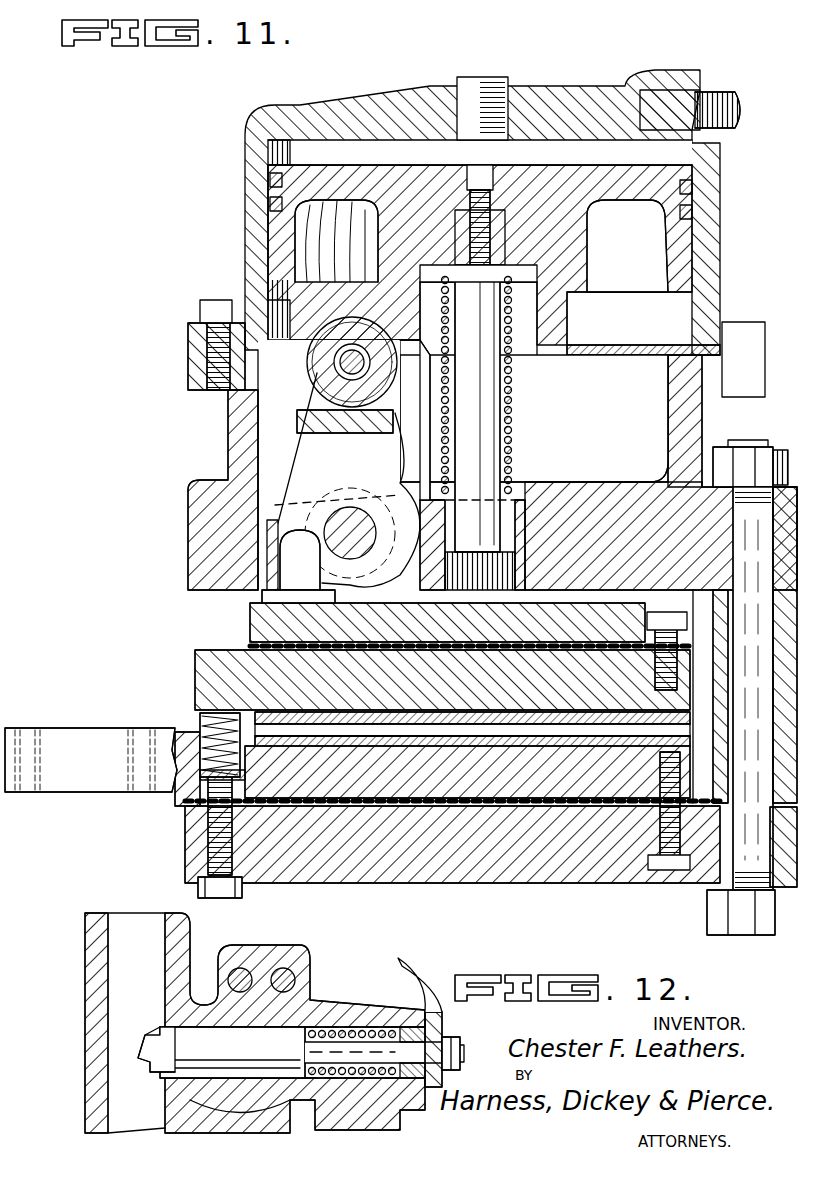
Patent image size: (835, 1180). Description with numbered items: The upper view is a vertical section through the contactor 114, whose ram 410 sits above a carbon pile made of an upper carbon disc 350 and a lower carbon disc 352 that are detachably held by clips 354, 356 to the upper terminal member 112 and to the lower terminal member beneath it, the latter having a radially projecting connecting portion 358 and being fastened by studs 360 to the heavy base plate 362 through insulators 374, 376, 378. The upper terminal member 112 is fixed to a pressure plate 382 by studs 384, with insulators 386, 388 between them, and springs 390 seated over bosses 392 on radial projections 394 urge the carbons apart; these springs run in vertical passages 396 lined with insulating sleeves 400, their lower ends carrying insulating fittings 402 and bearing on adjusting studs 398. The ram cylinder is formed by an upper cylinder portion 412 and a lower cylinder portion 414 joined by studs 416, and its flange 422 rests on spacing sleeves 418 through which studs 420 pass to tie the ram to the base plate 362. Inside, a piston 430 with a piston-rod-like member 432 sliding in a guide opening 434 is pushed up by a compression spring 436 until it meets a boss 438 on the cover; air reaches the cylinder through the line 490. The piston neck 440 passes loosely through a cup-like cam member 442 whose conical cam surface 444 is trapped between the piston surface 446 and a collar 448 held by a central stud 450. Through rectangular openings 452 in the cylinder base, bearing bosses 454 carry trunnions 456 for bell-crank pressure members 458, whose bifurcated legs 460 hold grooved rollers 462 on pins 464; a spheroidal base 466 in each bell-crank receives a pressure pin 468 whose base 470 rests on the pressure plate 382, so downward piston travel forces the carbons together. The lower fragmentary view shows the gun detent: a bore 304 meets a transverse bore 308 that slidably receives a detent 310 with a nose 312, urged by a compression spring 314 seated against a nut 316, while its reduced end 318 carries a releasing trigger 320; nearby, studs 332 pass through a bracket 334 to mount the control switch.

In FIG. 11, the ram 410 is at (700, 240).
In FIG. 11, the upper cylinder portion 412 is at (245, 232).
In FIG. 11, the lower cylinder portion 414 is at (255, 440).
In FIG. 11, the studs 416 is at (215, 300).
In FIG. 11, the spacing sleeves 418 is at (753, 688).
In FIG. 11, the studs 420 is at (745, 525).
In FIG. 11, the flange 422 is at (790, 470).
In FIG. 11, the piston 430 is at (525, 185).
In FIG. 11, the piston-rod-like member 432 is at (510, 425).
In FIG. 11, the guide opening 434 is at (540, 490).
In FIG. 11, the compression spring 436 is at (505, 378).
In FIG. 11, the boss 438 is at (430, 140).
In FIG. 11, the neck 440 is at (435, 240).
In FIG. 11, the cam member 442 is at (560, 258).
In FIG. 11, the conical cam surface 444 is at (580, 318).
In FIG. 11, the piston surface 446 is at (545, 228).
In FIG. 11, the collar 448 is at (505, 258).
In FIG. 11, the central stud 450 is at (478, 165).
In FIG. 11, the rectangular openings 452 is at (380, 605).
In FIG. 11, the bearing bosses 454 is at (400, 465).
In FIG. 11, the trunnions 456 is at (348, 508).
In FIG. 11, the pressure members 458 is at (258, 465).
In FIG. 11, the legs 460 is at (258, 405).
In FIG. 11, the grooved rollers 462 is at (348, 318).
In FIG. 11, the pins 464 is at (333, 357).
In FIG. 11, the base of recess 466 is at (275, 525).
In FIG. 11, the pressure pin 468 is at (300, 595).
In FIG. 11, the base of pressure pin 470 is at (265, 598).
In FIG. 11, the line 490 is at (718, 95).
In FIG. 11, the contactor 114 is at (230, 161).
In FIG. 11, the upper terminal member 112 is at (720, 675).
In FIG. 11, the upper carbon disc 350 is at (500, 712).
In FIG. 11, the lower carbon disc 352 is at (560, 735).
In FIG. 11, the clips 354 is at (470, 665).
In FIG. 11, the clips 356 is at (455, 752).
In FIG. 11, the connecting portion 358 is at (88, 790).
In FIG. 11, the studs 360 is at (665, 885).
In FIG. 11, the base plate 362 is at (520, 885).
In FIG. 11, the insulator 374 is at (505, 810).
In FIG. 11, the insulator 376 is at (692, 845).
In FIG. 11, the insulator 378 is at (648, 840).
In FIG. 11, the pressure plate 382 is at (525, 600).
In FIG. 11, the studs 384 is at (668, 605).
In FIG. 11, the insulator 386 is at (250, 645).
In FIG. 11, the insulator 388 is at (655, 662).
In FIG. 11, the springs 390 is at (647, 620).
In FIG. 11, the bosses 392 is at (235, 700).
In FIG. 11, the radial projections 394 is at (195, 680).
In FIG. 11, the vertical passages 396 is at (248, 773).
In FIG. 11, the adjusting studs 398 is at (232, 840).
In FIG. 11, the insulating sleeves 400 is at (245, 748).
In FIG. 11, the insulating fittings 402 is at (250, 783).
In FIG. 12, the bore 304 is at (170, 935).
In FIG. 12, the transverse bore 308 is at (275, 1025).
In FIG. 12, the detent 310 is at (240, 1080).
In FIG. 12, the nose 312 is at (150, 1060).
In FIG. 12, the compression spring 314 is at (368, 1030).
In FIG. 12, the nut 316 is at (448, 1037).
In FIG. 12, the reduced end 318 is at (465, 1050).
In FIG. 12, the releasing trigger 320 is at (420, 975).
In FIG. 12, the studs 332 is at (300, 950).
In FIG. 12, the bracket 334 is at (283, 942).